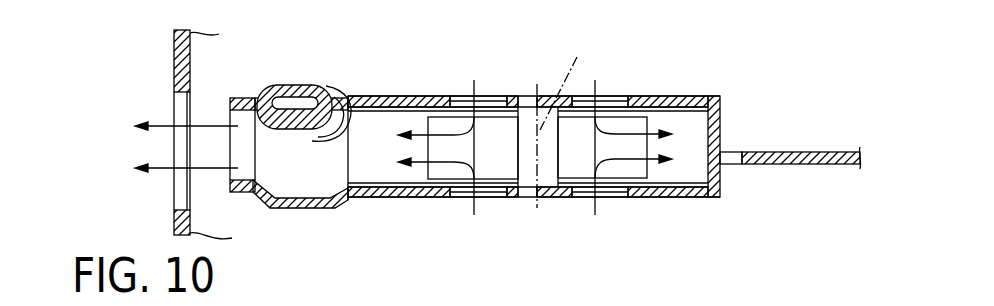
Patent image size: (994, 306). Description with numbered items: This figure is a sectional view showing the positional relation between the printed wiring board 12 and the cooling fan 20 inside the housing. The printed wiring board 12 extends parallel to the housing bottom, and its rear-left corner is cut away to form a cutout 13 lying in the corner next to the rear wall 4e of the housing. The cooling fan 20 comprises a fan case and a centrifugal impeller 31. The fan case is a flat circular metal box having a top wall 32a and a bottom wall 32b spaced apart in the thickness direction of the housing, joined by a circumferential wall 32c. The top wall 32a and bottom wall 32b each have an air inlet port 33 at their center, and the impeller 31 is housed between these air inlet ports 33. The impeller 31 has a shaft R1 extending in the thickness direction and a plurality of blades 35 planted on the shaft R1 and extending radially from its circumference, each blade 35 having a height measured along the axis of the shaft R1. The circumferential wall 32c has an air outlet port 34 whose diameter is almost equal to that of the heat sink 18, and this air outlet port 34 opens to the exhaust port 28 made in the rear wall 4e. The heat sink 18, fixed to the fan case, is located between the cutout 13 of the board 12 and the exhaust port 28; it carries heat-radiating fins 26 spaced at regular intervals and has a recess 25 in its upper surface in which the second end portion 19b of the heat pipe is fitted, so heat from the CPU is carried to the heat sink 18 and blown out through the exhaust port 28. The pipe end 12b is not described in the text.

The rear wall 4e is at (175, 66).
The exhaust port 28 is at (175, 194).
The heat sink 18 is at (242, 98).
The second end portion 19b is at (307, 84).
The recess 25 is at (345, 100).
The heat-radiating fins 26 is at (297, 186).
The top wall 32a is at (692, 96).
The bottom wall 32b is at (687, 197).
The circumferential wall 32c is at (713, 118).
The air inlet port 33 is at (458, 97).
The centrifugal impeller 31 is at (548, 182).
The cooling fan 20 is at (530, 88).
The shaft R1 is at (566, 79).
The blades 35 is at (442, 172).
The air outlet port 34 is at (375, 176).
The cutout 13 is at (732, 164).
The printed wiring board 12 is at (803, 165).
The pipe end 12b is at (833, 152).